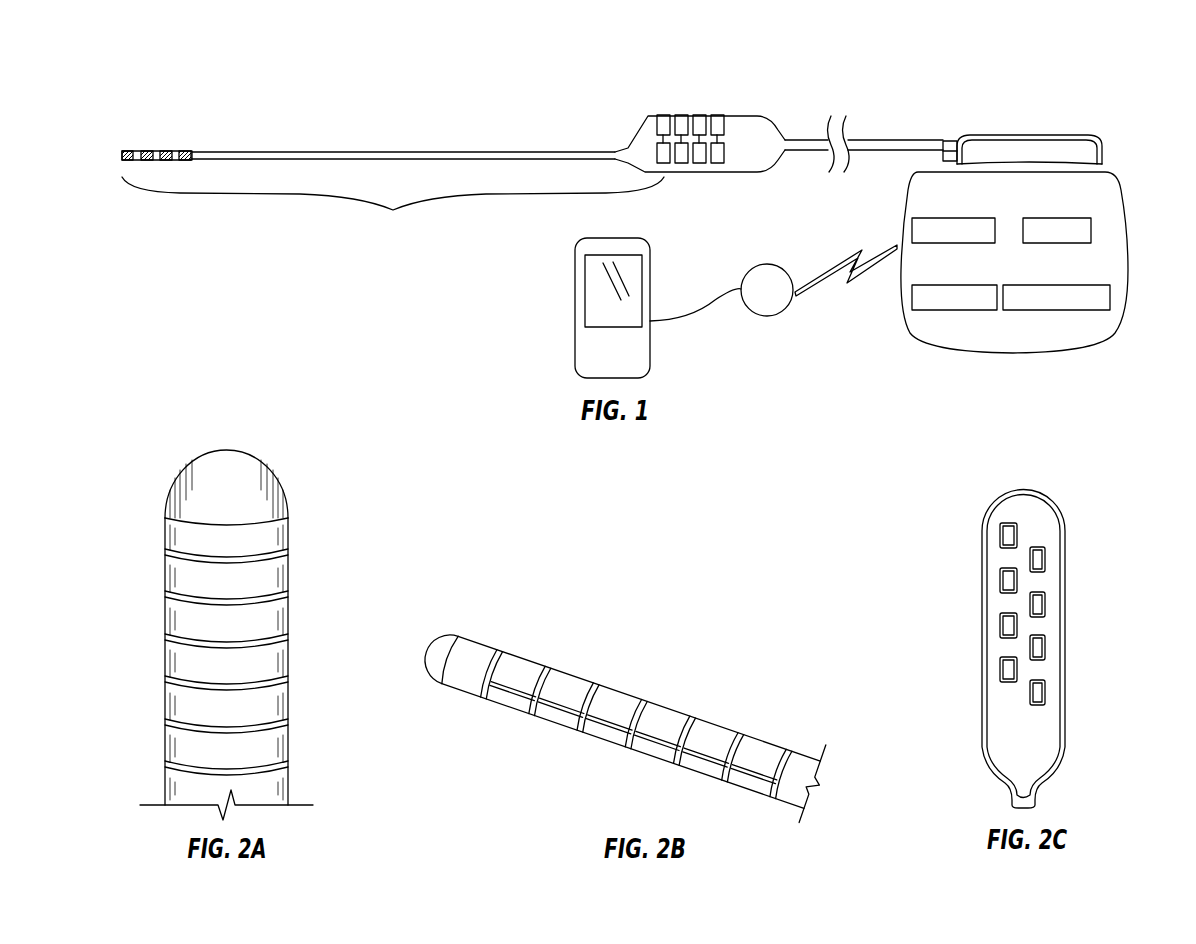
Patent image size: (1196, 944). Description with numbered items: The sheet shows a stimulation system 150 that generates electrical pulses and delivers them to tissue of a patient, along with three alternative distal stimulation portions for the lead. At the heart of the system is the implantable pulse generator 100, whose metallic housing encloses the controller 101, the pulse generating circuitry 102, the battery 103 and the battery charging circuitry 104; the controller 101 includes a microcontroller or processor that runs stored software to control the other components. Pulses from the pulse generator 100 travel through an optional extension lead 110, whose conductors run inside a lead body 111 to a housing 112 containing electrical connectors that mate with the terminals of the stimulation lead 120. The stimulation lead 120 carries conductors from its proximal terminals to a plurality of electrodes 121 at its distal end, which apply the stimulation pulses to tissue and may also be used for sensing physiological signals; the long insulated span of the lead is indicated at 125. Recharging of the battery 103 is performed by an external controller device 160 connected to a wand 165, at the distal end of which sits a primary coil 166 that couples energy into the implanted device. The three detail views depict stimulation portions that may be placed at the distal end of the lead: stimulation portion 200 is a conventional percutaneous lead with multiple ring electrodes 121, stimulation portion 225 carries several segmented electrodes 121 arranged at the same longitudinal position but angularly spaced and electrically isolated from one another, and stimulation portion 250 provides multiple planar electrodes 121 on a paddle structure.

In FIG. 1, the implantable pulse generator 100 is at (980, 262).
In FIG. 1, the controller 101 is at (1037, 285).
In FIG. 1, the pulse generating circuitry 102 is at (1037, 218).
In FIG. 1, the battery 103 is at (940, 218).
In FIG. 1, the battery charging circuitry 104 is at (941, 285).
In FIG. 1, the extension lead 110 is at (779, 122).
In FIG. 1, the lead body 111 is at (875, 138).
In FIG. 1, the housing 112 is at (692, 114).
In FIG. 1, the stimulation lead 120 is at (335, 139).
In FIG. 1, the electrodes 121 is at (127, 151).
In FIG. 2A, the electrodes 121 is at (209, 549).
In FIG. 2B, the electrodes 121 is at (437, 648).
In FIG. 2C, the electrodes 121 is at (998, 537).
In FIG. 1, the lead body 125 is at (393, 207).
In FIG. 1, the stimulation system 150 is at (1005, 228).
In FIG. 1, the controller device 160 is at (575, 298).
In FIG. 1, the wand 165 is at (712, 297).
In FIG. 1, the coil 166 is at (771, 317).
In FIG. 2A, the stimulation portion 200 is at (204, 604).
In FIG. 2B, the stimulation portion 225 is at (607, 702).
In FIG. 2C, the stimulation portion 250 is at (1010, 631).